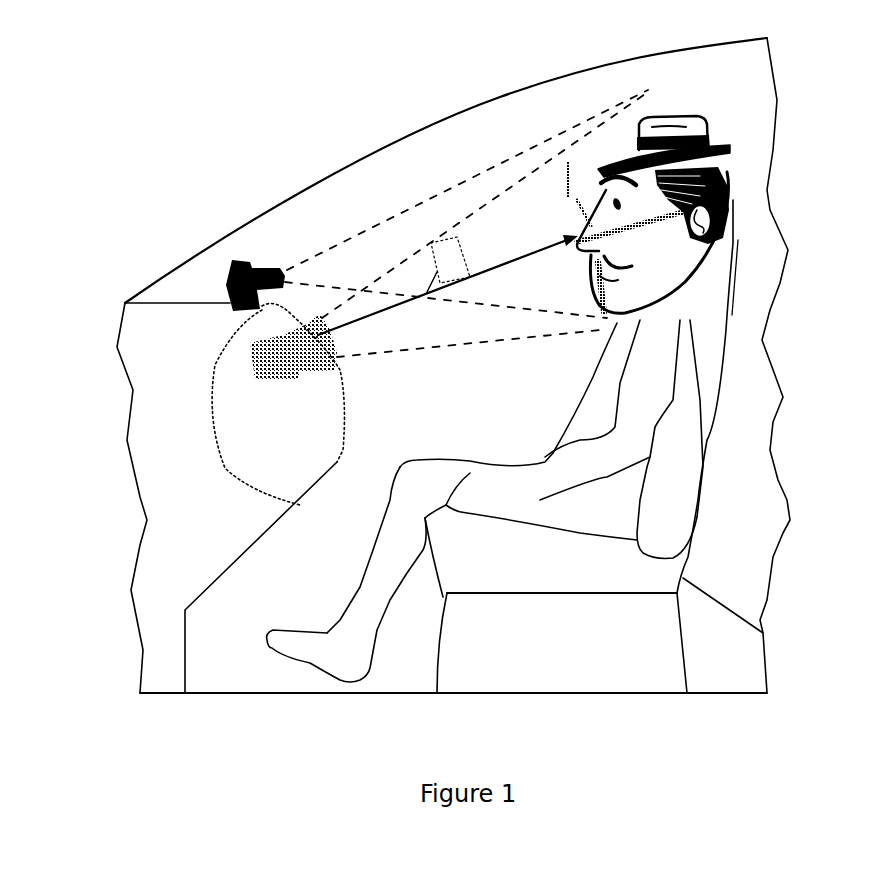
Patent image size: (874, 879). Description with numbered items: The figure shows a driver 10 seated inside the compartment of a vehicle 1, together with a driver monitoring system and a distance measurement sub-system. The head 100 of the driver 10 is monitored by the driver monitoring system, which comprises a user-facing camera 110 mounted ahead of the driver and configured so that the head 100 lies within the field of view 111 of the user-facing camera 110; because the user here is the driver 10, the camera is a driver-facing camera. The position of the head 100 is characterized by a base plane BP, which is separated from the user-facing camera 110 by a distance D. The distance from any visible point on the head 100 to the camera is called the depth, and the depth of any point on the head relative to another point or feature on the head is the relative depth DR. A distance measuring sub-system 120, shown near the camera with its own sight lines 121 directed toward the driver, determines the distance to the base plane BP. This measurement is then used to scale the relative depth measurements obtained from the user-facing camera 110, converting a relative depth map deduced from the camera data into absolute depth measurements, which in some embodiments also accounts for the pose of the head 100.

The vehicle 1 is at (432, 118).
The driver 10 is at (672, 420).
The head 100 is at (680, 293).
The user-facing camera 110 is at (267, 377).
The field of view 111 is at (437, 342).
The distance measuring sub-system 120 is at (233, 267).
The field of view boundary of second camera 121 is at (357, 233).
The distance D is at (448, 264).
The base plane BP is at (548, 188).
The relative depth DR is at (651, 229).